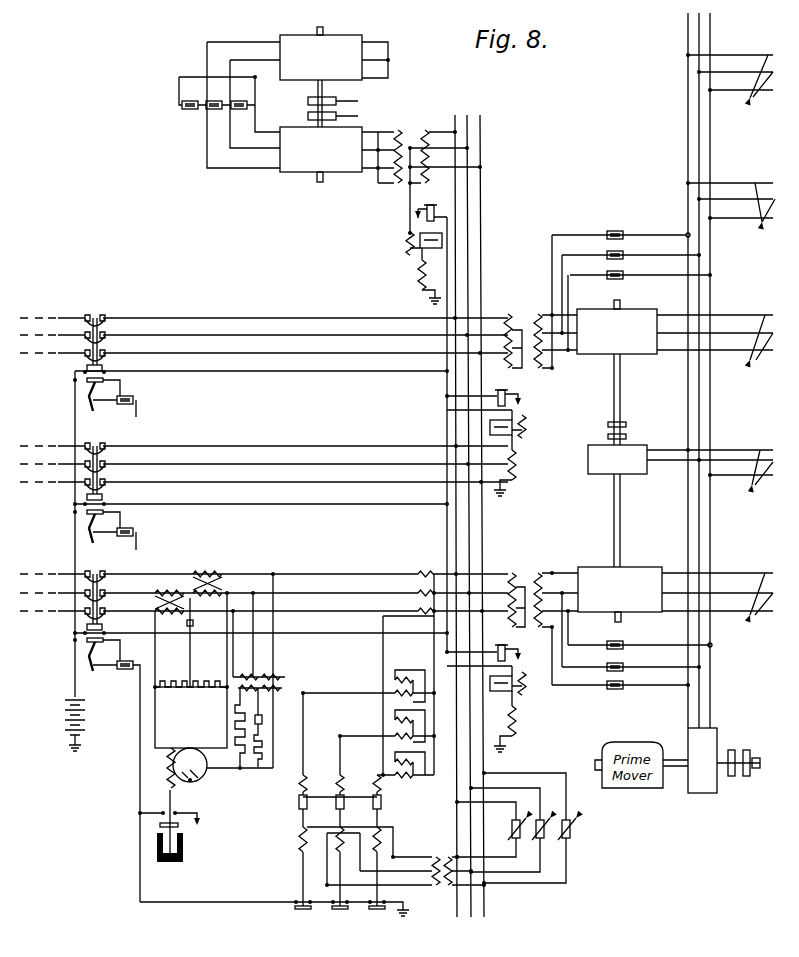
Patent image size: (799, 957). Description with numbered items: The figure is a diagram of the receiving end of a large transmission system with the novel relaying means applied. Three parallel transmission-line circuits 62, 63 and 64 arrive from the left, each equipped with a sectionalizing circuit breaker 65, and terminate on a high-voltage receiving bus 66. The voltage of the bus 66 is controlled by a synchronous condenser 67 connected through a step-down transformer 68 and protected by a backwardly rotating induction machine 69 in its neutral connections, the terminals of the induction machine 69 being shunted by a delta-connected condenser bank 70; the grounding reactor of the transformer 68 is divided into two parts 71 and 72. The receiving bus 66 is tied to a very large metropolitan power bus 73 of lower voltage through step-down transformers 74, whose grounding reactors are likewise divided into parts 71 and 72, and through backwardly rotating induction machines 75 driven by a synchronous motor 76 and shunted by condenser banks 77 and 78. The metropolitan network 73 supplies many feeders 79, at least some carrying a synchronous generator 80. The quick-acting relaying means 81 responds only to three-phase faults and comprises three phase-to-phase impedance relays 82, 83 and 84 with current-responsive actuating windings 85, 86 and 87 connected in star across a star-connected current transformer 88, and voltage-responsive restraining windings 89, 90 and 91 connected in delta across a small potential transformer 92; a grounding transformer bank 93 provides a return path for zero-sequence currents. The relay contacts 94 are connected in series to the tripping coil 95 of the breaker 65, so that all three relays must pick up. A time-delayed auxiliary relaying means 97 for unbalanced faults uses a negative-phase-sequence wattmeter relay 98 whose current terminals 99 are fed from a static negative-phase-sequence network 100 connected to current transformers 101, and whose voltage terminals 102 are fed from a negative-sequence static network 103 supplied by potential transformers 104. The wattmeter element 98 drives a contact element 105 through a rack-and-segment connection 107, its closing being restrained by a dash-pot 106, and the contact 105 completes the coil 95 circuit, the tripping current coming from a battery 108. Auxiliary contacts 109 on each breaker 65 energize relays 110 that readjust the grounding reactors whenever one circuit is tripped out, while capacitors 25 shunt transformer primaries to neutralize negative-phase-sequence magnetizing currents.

The capacitors 25 is at (570, 837).
The transmission-line circuit 62 is at (250, 353).
The transmission-line circuit 63 is at (222, 482).
The transmission-line circuit 64 is at (270, 611).
The sectionalizing circuit breaker 65 is at (100, 316).
The high-voltage bus 66 is at (482, 202).
The synchronous condenser 67 is at (310, 172).
The step-down transformer 68 is at (397, 128).
The backwardly rotating induction machine 69 is at (358, 37).
The condenser bank 70 is at (178, 105).
The grounding reactor part 71 is at (409, 240).
The grounding reactor part 72 is at (420, 271).
The metropolitan power bus 73 is at (704, 112).
The step-down transformers 74 is at (523, 315).
The backwardly rotating induction machines 75 is at (641, 354).
The synchronous motor 76 is at (645, 445).
The condenser bank 77 is at (625, 232).
The condenser bank 78 is at (615, 690).
The feeders 79 is at (699, 712).
The synchronous generator 80 is at (704, 793).
The quick-acting relaying means 81 is at (349, 954).
The phase-to-phase impedance relay 82 is at (373, 812).
The phase-to-phase impedance relay 83 is at (336, 812).
The phase-to-phase impedance relay 84 is at (299, 812).
The current-responsive actuating winding 85 is at (378, 774).
The current-responsive actuating winding 86 is at (340, 774).
The current-responsive actuating winding 87 is at (301, 774).
The star-connected current transformer 88 is at (420, 609).
The voltage-responsive restraining winding 89 is at (381, 844).
The voltage-responsive restraining winding 90 is at (342, 836).
The voltage-responsive restraining winding 91 is at (299, 844).
The potential transformer 92 is at (439, 855).
The grounding transformer bank 93 is at (418, 659).
The contacts 94 is at (298, 910).
The tripping coil 95 is at (130, 663).
The auxiliary relaying means 97 is at (196, 727).
The negative-phase-sequence wattmeter relay 98 is at (198, 776).
The current terminals 99 is at (195, 750).
The static negative-phase-sequence network 100 is at (180, 683).
The current transformers 101 is at (205, 572).
The voltage terminals 102 is at (192, 782).
The negative-sequence static network 103 is at (252, 770).
The potential transformers 104 is at (275, 680).
The contact element 105 is at (160, 825).
The dash-pot 106 is at (184, 856).
The rack-and-segment connection 107 is at (167, 768).
The battery 108 is at (65, 705).
The auxiliary contacts 109 is at (105, 370).
The relays 110 is at (438, 201).